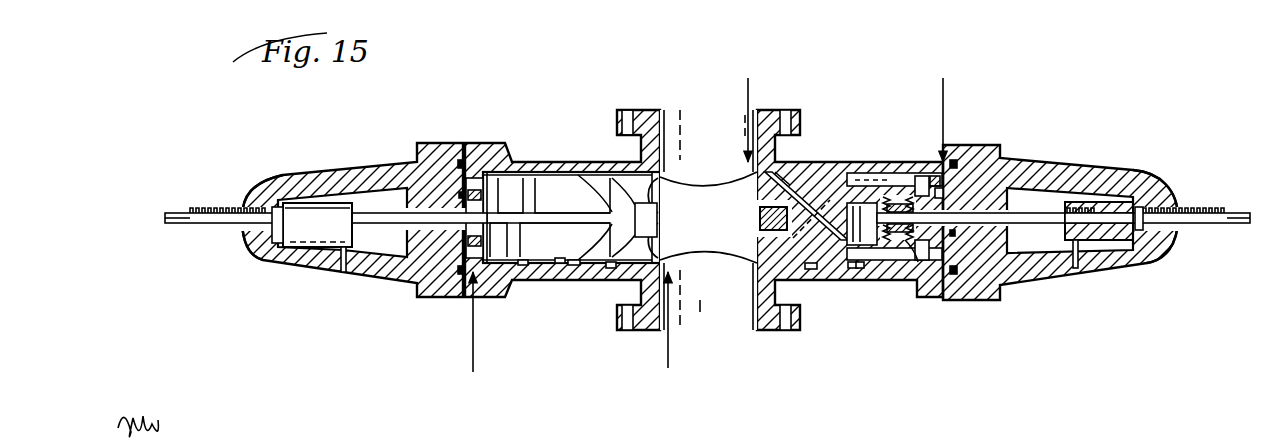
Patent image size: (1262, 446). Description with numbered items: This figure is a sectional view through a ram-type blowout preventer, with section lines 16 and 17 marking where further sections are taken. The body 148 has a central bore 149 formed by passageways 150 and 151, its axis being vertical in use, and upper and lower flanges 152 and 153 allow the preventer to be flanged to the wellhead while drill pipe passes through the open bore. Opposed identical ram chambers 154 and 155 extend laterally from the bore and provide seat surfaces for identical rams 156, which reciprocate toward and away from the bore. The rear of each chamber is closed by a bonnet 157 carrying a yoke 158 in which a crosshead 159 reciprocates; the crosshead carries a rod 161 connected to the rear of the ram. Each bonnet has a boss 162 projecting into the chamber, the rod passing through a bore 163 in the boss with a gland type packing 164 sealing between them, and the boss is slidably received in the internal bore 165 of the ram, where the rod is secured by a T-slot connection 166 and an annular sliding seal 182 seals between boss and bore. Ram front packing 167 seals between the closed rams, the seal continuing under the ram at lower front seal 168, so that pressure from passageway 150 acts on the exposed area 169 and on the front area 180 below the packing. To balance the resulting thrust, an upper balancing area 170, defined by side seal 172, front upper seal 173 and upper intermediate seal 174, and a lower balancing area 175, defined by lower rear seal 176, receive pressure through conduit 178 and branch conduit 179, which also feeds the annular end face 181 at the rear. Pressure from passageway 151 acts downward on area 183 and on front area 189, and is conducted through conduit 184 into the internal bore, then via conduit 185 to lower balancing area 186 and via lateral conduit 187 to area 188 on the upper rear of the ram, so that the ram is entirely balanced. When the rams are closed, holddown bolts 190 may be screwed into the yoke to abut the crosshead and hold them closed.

The section line 16- 16 is at (566, 337).
The section line 17- 17 is at (848, 103).
The body 148 is at (620, 158).
The central bore 149 is at (666, 108).
The passageway 150 is at (700, 322).
The passageway 151 is at (688, 116).
The upper flange 152 is at (800, 110).
The lower flange 153 is at (790, 336).
The ram chamber 154 is at (537, 270).
The ram chamber 155 is at (878, 262).
The ram 156 is at (522, 268).
The bonnet 157 is at (411, 160).
The yoke 158 is at (337, 172).
The crosshead 159 is at (292, 250).
The rod 161 is at (370, 249).
The boss 162 is at (420, 281).
The bore 163 is at (990, 224).
The gland type packing 164 is at (920, 268).
The internal bore 165 is at (860, 270).
The T-slot connection 166 is at (870, 178).
The ram front packing 167 is at (680, 215).
The lower front seal 168 is at (573, 266).
The exposed area 169 is at (612, 270).
The upper balancing area 170 is at (540, 183).
The side seal 172 is at (560, 180).
The front upper seal 173 is at (583, 200).
The upper intermediate seal 174 is at (520, 178).
The lower balancing area 175 is at (483, 268).
The lower rear seal 176 is at (495, 268).
The conduit 178 is at (835, 176).
The branch conduit 179 is at (880, 178).
The area of the ram front / upper rear seal 180 is at (468, 160).
The annular end face 181 is at (452, 188).
The annular sliding seal 182 is at (968, 175).
The area 183 is at (656, 182).
The conduit 184 is at (780, 176).
The conduit 185 is at (822, 283).
The lower balancing area 186 is at (560, 263).
The lateral conduit 187 is at (915, 176).
The area 188 is at (512, 165).
The area of the ram front 189 is at (756, 210).
The holddown bolt 190 is at (205, 212).